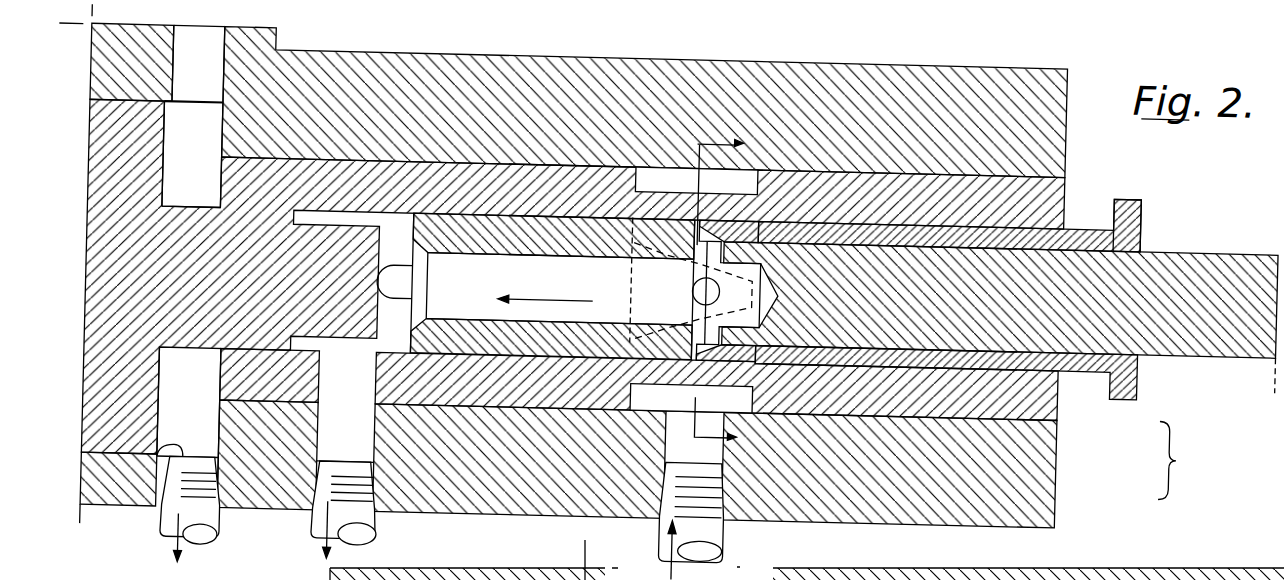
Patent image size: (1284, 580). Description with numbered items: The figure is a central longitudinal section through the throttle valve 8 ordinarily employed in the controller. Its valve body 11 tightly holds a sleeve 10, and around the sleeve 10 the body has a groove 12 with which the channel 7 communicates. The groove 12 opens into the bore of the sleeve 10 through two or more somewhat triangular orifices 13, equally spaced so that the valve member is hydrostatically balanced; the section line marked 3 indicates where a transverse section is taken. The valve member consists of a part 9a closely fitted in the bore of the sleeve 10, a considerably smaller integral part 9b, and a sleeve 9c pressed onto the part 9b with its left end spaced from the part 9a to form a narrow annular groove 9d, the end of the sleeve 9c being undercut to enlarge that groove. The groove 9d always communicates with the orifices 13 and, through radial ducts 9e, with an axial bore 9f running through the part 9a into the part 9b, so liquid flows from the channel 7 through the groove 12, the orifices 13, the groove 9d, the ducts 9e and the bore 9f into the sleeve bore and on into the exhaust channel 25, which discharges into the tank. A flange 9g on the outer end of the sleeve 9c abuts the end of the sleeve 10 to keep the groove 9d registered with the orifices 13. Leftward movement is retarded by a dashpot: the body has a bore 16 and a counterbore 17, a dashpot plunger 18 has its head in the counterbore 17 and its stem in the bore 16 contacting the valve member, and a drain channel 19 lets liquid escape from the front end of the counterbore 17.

The section line 3- 3 is at (726, 291).
The channel 7 is at (723, 532).
The valve 8 is at (1178, 460).
The part 9a is at (553, 348).
The part 9b is at (1186, 320).
The sleeve 9c is at (1077, 226).
The annular groove 9d is at (702, 387).
The radial ducts 9e is at (693, 292).
The axial bore 9f is at (560, 289).
The flange 9g is at (1131, 195).
The sleeve 10 is at (1046, 396).
The valve body 11 is at (1048, 466).
The groove 12 is at (694, 290).
The orifices 13 is at (628, 290).
The bore 16 is at (238, 218).
The counterbore 17 is at (161, 466).
The dashpot plunger 18 is at (144, 385).
The drain channel 19 is at (216, 538).
The exhaust channel 25 is at (386, 532).